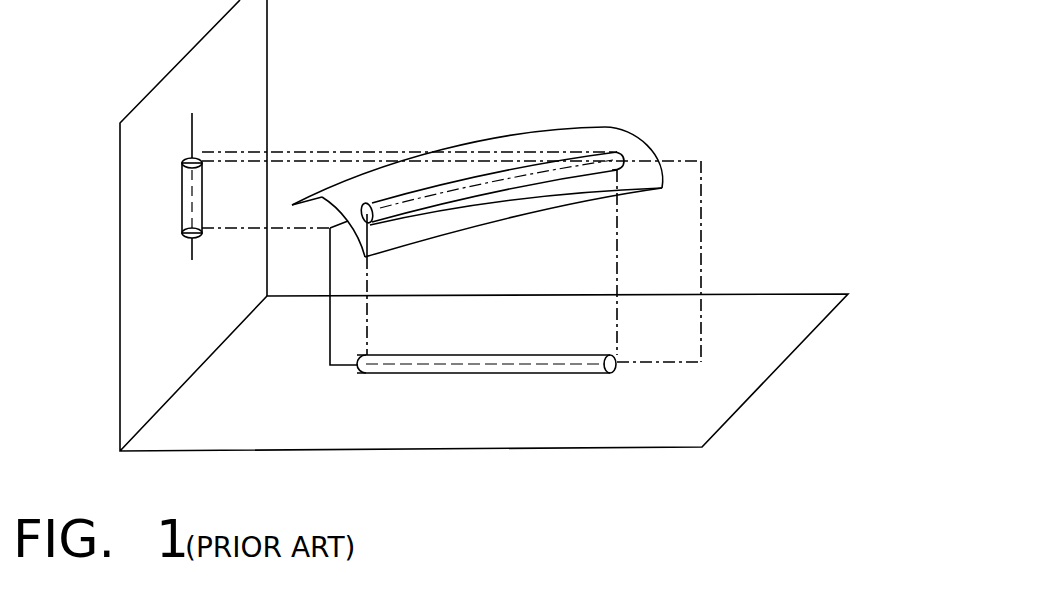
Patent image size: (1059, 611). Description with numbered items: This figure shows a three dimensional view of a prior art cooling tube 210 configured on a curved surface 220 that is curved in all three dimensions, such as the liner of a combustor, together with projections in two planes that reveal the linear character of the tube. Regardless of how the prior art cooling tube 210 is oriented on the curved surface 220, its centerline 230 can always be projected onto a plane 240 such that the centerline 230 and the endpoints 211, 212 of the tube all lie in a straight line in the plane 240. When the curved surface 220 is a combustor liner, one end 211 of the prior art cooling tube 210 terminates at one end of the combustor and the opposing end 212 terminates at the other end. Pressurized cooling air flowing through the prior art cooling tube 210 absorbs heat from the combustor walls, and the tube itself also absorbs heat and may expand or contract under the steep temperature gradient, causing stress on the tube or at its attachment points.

The prior art cooling tube 210 is at (530, 162).
The end of cooling tube 211 is at (362, 207).
The opposing end of cooling tube 212 is at (618, 162).
The curved surface 220 is at (467, 145).
The centerline 230 is at (337, 367).
The plane 240 is at (400, 453).